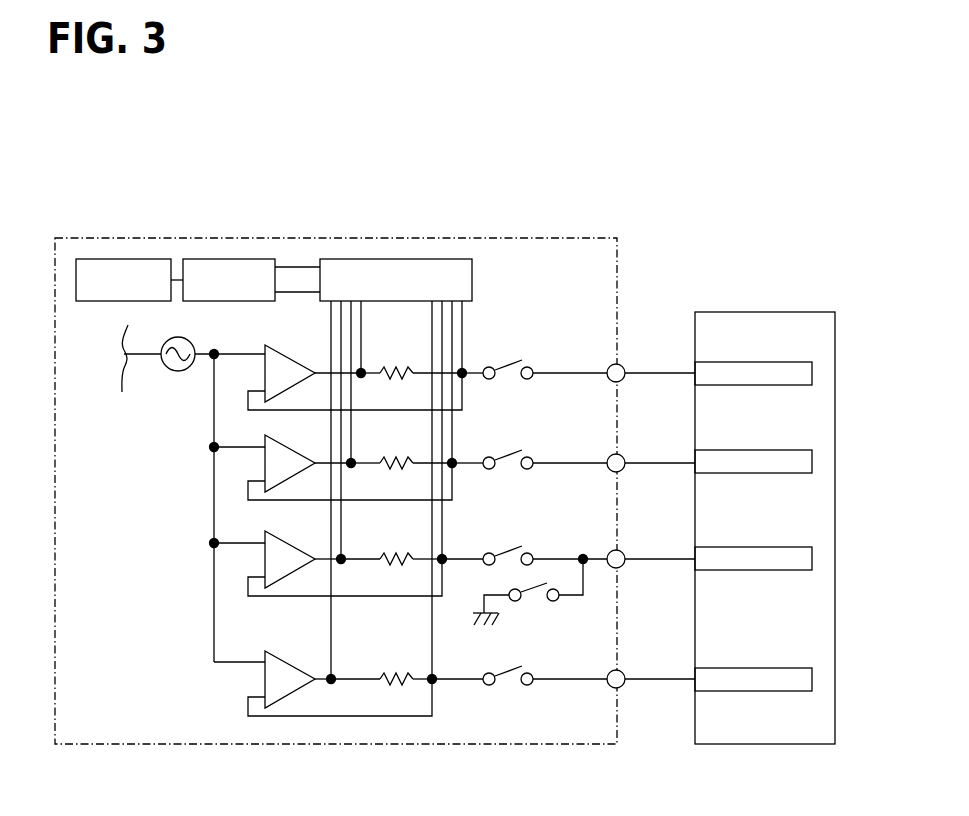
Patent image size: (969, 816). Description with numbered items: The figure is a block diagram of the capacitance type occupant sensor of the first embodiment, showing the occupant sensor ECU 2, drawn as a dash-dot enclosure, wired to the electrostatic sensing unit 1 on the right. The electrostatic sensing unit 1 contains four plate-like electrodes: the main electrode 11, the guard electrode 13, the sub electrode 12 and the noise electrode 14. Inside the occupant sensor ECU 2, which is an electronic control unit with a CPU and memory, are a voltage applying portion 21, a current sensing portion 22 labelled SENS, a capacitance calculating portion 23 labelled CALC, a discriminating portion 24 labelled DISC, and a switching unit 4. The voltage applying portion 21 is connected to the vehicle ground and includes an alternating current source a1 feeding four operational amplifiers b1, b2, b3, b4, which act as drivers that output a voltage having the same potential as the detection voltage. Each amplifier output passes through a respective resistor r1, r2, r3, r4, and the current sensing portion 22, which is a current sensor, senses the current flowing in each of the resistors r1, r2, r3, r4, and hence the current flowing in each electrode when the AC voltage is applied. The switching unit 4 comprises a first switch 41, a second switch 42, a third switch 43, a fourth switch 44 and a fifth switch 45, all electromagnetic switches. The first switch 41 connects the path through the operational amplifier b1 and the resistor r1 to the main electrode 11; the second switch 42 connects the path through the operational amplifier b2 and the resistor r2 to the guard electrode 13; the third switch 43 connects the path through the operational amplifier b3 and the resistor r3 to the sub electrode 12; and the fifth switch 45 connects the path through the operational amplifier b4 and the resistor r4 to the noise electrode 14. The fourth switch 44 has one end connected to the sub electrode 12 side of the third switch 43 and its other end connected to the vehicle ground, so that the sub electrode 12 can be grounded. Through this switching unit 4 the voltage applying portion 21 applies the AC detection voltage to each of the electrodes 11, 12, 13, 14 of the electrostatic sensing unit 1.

The electrostatic sensing unit 1 is at (740, 496).
The main electrode 11 is at (752, 362).
The sub electrode 12 is at (752, 547).
The guard electrode 13 is at (752, 450).
The noise electrode 14 is at (752, 668).
The occupant sensor ECU 2 is at (522, 237).
The voltage applying portion 21 is at (125, 404).
The current sensing portion 22 is at (395, 259).
The capacitance calculating portion 23 is at (232, 259).
The discriminating portion 24 is at (124, 259).
The switching unit 4 is at (568, 295).
The first switch 41 is at (530, 360).
The second switch 42 is at (528, 457).
The third switch 43 is at (528, 552).
The fourth switch 44 is at (515, 602).
The fifth switch 45 is at (487, 687).
The alternating current source a1 is at (180, 372).
The operational amplifier b1 is at (288, 355).
The operational amplifier b2 is at (288, 445).
The operational amplifier b3 is at (288, 541).
The operational amplifier b4 is at (288, 661).
The resistor r1 is at (401, 366).
The resistor r2 is at (403, 456).
The resistor r3 is at (406, 553).
The resistor r4 is at (401, 672).